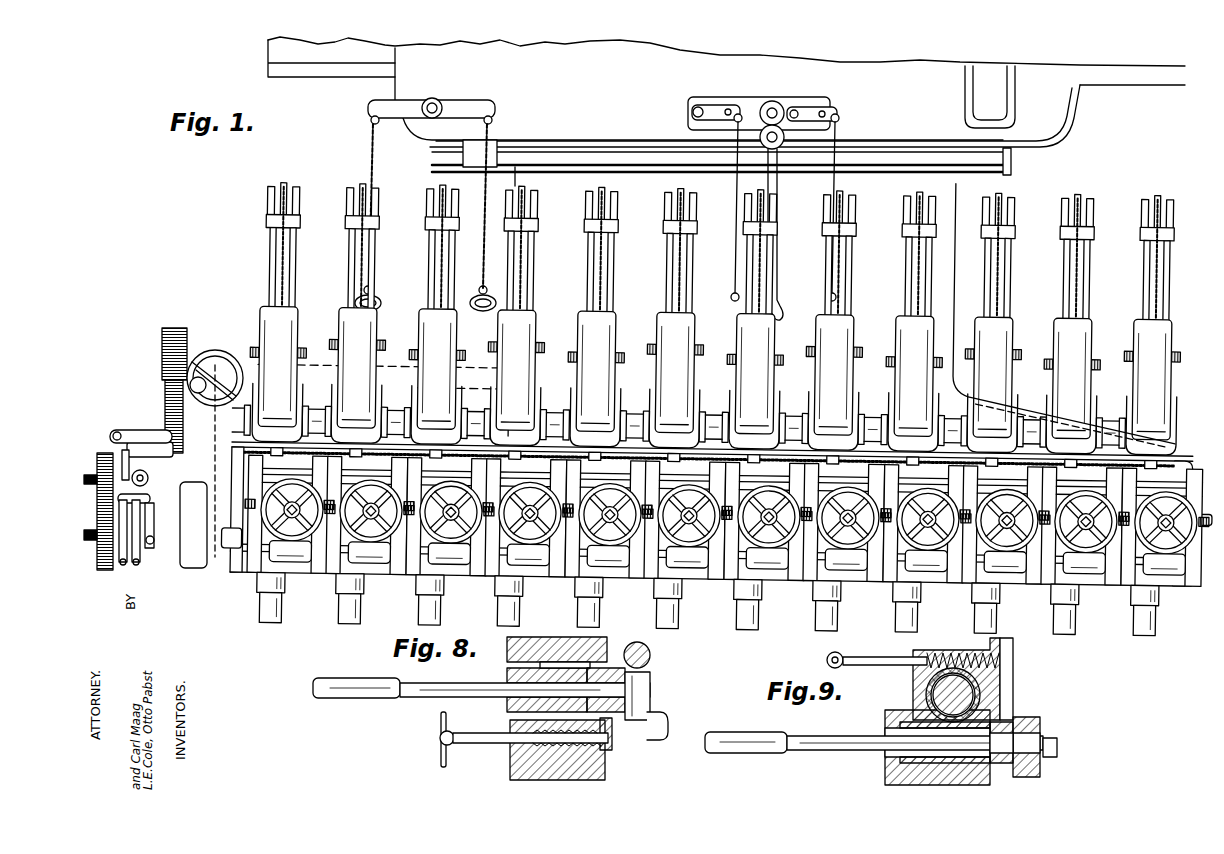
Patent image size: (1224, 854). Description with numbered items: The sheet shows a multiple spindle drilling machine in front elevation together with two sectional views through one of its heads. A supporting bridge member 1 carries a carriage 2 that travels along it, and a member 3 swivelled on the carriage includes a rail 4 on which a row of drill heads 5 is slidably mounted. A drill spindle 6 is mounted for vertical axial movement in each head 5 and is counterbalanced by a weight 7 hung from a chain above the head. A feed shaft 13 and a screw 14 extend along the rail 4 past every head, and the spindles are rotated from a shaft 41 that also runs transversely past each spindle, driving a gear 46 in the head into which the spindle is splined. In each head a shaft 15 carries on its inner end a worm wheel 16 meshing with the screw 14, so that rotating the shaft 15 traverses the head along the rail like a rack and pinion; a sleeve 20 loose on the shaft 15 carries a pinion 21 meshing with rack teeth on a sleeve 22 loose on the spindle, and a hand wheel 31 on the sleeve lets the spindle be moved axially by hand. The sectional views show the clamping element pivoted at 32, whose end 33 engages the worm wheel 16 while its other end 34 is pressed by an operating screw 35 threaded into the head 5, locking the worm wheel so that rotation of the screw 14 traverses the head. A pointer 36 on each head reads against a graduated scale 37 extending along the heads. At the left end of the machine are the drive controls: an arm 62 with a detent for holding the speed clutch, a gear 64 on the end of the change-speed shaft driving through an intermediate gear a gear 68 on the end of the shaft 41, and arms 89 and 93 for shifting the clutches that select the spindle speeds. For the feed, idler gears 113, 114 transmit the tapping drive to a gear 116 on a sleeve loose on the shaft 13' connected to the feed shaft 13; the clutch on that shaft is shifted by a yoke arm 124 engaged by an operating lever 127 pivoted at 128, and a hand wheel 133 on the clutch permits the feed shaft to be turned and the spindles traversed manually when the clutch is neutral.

In FIG. 1, the supporting bridge member 1 is at (1152, 87).
In FIG. 1, the carriage 2 is at (1072, 142).
In FIG. 1, the member 3 is at (940, 193).
In FIG. 1, the rail 4 is at (1193, 478).
In FIG. 1, the drill heads 5 is at (1068, 574).
In FIG. 8, the drill heads 5 is at (535, 780).
In FIG. 9, the drill heads 5 is at (957, 652).
In FIG. 1, the drill spindle 6 is at (997, 617).
In FIG. 9, the drill spindle 6 is at (913, 680).
In FIG. 1, the weight 7 is at (1136, 324).
In FIG. 1, the feed shaft 13 is at (851, 591).
In FIG. 1, the shaft 13' is at (212, 545).
In FIG. 1, the screw 14 is at (962, 504).
In FIG. 8, the screw 14 is at (651, 653).
In FIG. 8, the shaft 15 is at (383, 699).
In FIG. 9, the shaft 15 is at (826, 752).
In FIG. 8, the worm wheel 16 is at (651, 673).
In FIG. 9, the worm wheel 16 is at (1040, 720).
In FIG. 8, the sleeve 20 is at (507, 676).
In FIG. 8, the pinion 21 is at (550, 662).
In FIG. 9, the pinion 21 is at (965, 780).
In FIG. 9, the sleeve 22 is at (925, 702).
In FIG. 1, the hand wheel 31 is at (1067, 500).
In FIG. 8, the clamping element pivot 32 is at (613, 752).
In FIG. 9, the clamping element pivot 32 is at (1005, 780).
In FIG. 8, the clamping element end 33 is at (666, 722).
In FIG. 9, the clamping element end 33 is at (1056, 757).
In FIG. 9, the clamping element end 34 is at (1013, 670).
In FIG. 8, the operating screw 35 is at (488, 745).
In FIG. 9, the operating screw 35 is at (885, 656).
In FIG. 1, the pointer 36 is at (1150, 450).
In FIG. 1, the graduated scale 37 is at (947, 445).
In FIG. 1, the shaft 41 is at (868, 420).
In FIG. 1, the gear 46 is at (1093, 360).
In FIG. 1, the lever arm 62 is at (137, 431).
In FIG. 1, the gear 64 is at (173, 328).
In FIG. 1, the gear 68 is at (163, 392).
In FIG. 1, the arm 89 is at (211, 392).
In FIG. 1, the arm 93 is at (200, 356).
In FIG. 1, the idler gear 113 is at (100, 455).
In FIG. 1, the idler gear 114 is at (92, 482).
In FIG. 1, the gear 116 is at (97, 560).
In FIG. 1, the yoke arm 124 is at (135, 562).
In FIG. 1, the operating lever 127 is at (150, 500).
In FIG. 1, the lever pivot 128 is at (120, 565).
In FIG. 1, the hand wheel 133 is at (148, 562).